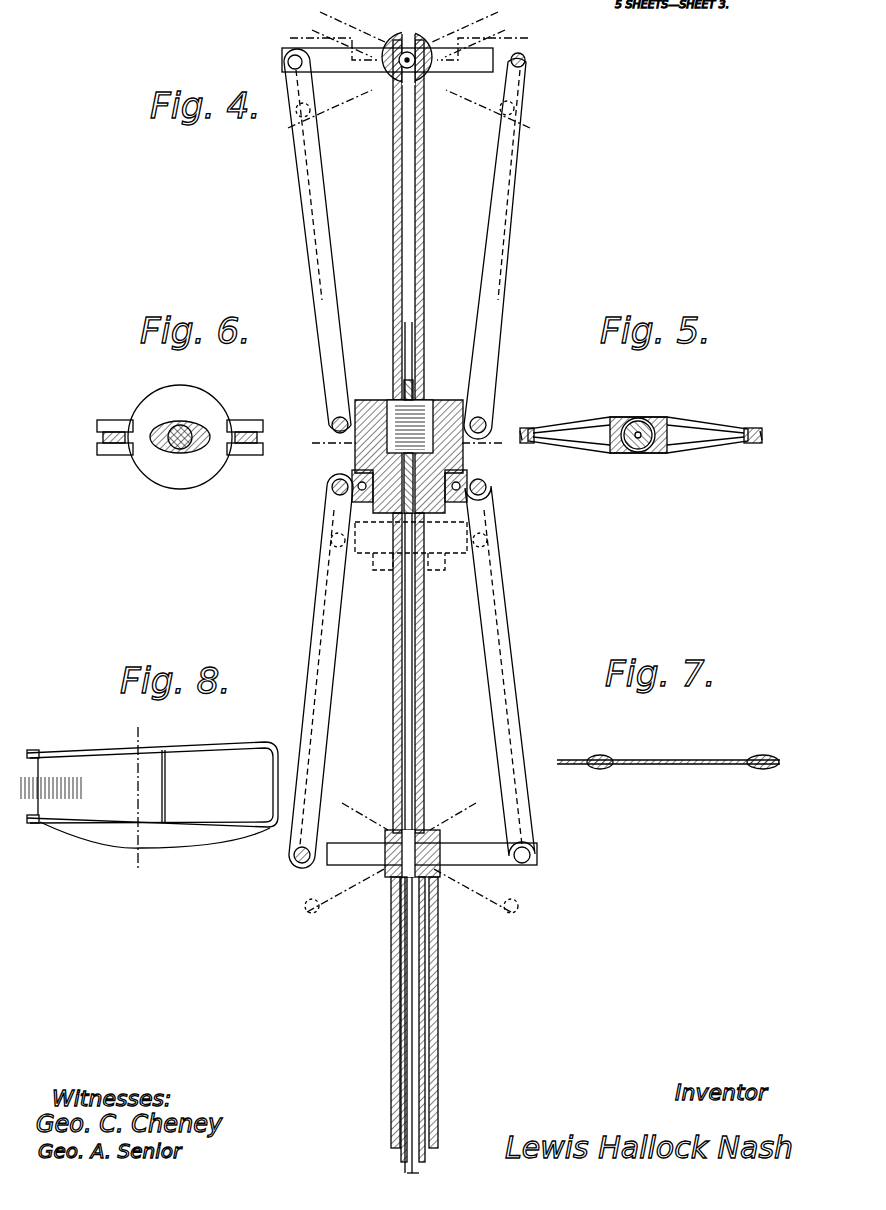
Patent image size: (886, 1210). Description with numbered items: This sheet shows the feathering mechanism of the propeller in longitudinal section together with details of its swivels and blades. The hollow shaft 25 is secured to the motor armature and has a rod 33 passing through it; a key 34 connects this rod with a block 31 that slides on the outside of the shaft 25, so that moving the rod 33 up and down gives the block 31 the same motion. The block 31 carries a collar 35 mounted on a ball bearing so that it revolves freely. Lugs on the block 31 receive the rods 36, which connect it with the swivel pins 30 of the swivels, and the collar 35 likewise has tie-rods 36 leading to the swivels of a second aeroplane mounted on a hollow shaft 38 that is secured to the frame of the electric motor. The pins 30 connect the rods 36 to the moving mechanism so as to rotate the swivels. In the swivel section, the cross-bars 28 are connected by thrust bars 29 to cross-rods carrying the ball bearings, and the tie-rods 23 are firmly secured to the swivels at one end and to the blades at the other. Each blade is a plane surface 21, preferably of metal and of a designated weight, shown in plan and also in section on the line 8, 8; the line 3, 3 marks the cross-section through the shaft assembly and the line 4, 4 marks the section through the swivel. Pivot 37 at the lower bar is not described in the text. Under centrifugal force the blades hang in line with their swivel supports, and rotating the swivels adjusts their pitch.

In FIG. 4, the section line 3 is at (403, 462).
In FIG. 4, the section line 4 is at (405, 445).
In FIG. 8, the section line 8 is at (136, 801).
In FIG. 7, the plane surface 21 is at (675, 765).
In FIG. 8, the plane surface 21 is at (125, 807).
In FIG. 5, the tie rods 23 is at (522, 443).
In FIG. 8, the tie rods 23 is at (30, 748).
In FIG. 4, the shaft 25 is at (424, 190).
In FIG. 5, the cross-bars 28 is at (638, 443).
In FIG. 5, the thrust bars 29 is at (530, 428).
In FIG. 4, the pins 30 is at (295, 62).
In FIG. 4, the block 31 is at (355, 405).
In FIG. 6, the block 31 is at (215, 408).
In FIG. 4, the rod 33 is at (411, 355).
In FIG. 4, the key 34 is at (420, 410).
In FIG. 4, the collar 35 is at (467, 492).
In FIG. 4, the rods 36 is at (316, 255).
In FIG. 4, the lower pivot pin 37 is at (297, 862).
In FIG. 4, the hollow shaft 38 is at (438, 1000).